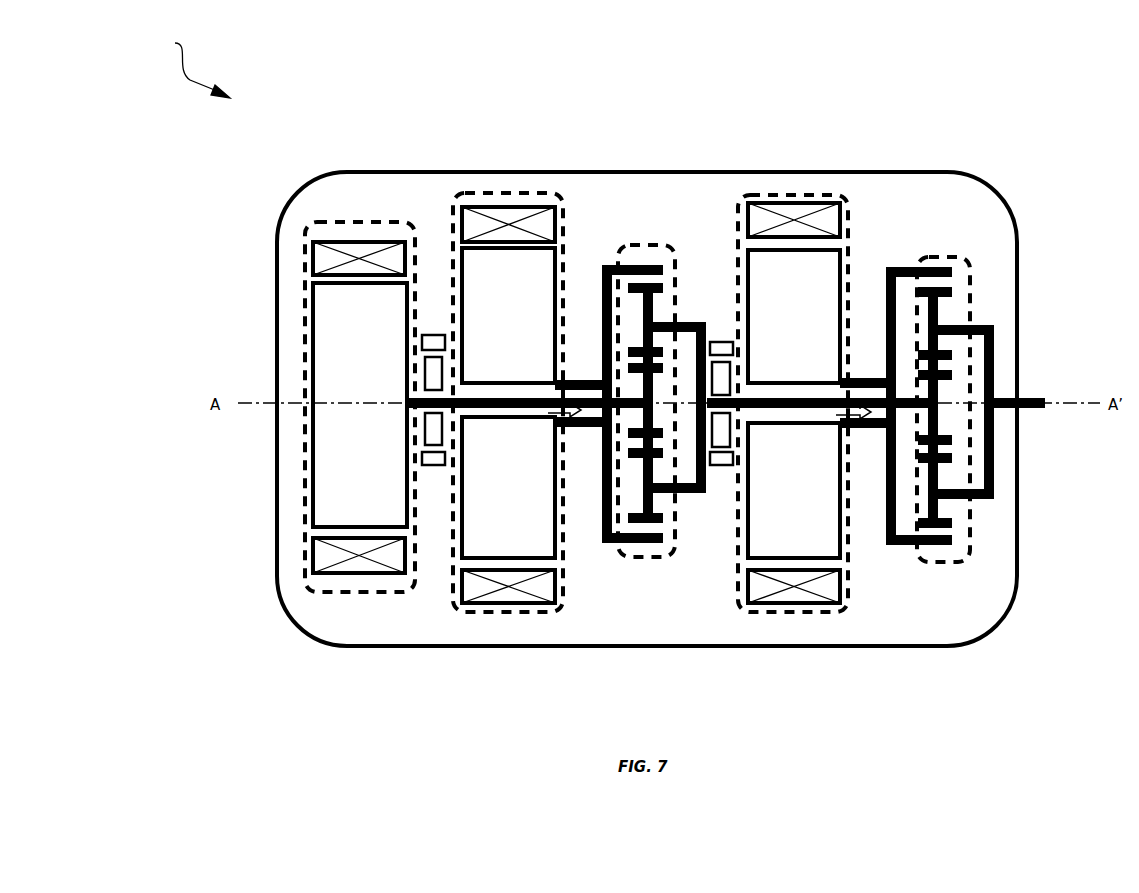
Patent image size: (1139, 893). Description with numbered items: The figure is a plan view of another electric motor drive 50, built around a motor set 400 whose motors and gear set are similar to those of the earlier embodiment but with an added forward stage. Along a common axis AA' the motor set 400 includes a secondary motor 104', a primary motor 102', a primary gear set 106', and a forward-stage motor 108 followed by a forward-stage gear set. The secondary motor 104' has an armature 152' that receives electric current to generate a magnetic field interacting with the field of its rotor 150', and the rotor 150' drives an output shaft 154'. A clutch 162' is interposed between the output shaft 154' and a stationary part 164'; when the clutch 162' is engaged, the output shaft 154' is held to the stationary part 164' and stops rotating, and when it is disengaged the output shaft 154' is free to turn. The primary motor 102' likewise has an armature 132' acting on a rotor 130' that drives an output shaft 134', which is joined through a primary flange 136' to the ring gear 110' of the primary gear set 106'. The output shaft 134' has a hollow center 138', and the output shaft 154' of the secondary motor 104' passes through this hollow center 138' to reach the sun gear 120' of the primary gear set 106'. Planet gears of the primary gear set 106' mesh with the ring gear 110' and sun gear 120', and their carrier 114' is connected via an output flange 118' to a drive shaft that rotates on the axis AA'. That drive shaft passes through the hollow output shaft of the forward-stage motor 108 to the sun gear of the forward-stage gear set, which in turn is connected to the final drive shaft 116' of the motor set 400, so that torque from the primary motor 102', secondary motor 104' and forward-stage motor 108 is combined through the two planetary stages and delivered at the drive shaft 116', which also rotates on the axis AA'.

The electric motor drive 50 is at (191, 67).
The motor set 400 is at (987, 187).
The secondary motor 104' is at (347, 372).
The armature 152' is at (321, 390).
The rotor 150' is at (311, 405).
The clutch 162' is at (397, 359).
The stationary part 164' is at (394, 453).
The primary motor 102' is at (539, 366).
The armature 132' is at (507, 371).
The rotor 130' is at (542, 378).
The output shaft 154' is at (528, 377).
The hollow center 138' is at (525, 455).
The primary gear set 106' is at (662, 321).
The ring gear 110' is at (669, 330).
The primary flange 136' is at (558, 404).
The output shaft 134' is at (563, 370).
The sun gear 120' is at (693, 398).
The carrier 114' is at (638, 547).
The output flange 118' is at (700, 518).
The forward-stage motor 108 is at (838, 195).
The drive shaft 116' is at (1056, 365).